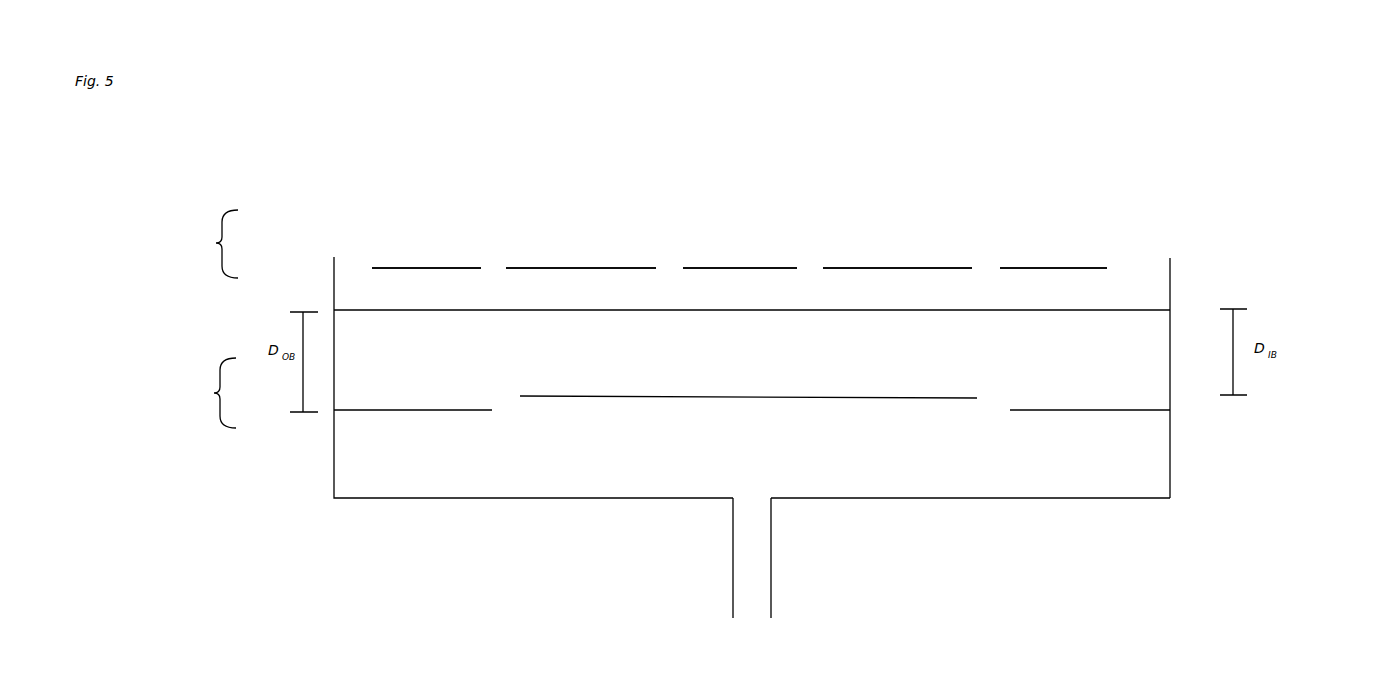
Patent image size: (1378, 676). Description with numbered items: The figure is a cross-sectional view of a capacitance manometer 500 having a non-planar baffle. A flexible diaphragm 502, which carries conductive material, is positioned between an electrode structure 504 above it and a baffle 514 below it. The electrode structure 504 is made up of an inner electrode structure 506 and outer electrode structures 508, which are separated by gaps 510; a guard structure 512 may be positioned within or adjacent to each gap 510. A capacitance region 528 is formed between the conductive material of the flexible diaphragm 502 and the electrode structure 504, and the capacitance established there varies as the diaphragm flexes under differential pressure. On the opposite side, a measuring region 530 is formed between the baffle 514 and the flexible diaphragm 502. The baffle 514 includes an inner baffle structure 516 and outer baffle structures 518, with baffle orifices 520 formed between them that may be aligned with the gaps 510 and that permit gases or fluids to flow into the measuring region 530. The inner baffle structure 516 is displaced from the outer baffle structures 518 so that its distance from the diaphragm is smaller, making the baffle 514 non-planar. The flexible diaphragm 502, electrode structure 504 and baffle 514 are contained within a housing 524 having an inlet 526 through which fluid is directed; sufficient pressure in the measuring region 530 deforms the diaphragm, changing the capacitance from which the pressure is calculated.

The capacitance manometer 500 is at (1283, 206).
The flexible diaphragm 502 is at (373, 308).
The electrode structure 504 is at (216, 243).
The inner electrode structure 506 is at (776, 268).
The outer electrode structure 508 is at (452, 268).
The gap 510 is at (668, 272).
The guard structure 512 is at (580, 268).
The baffle 514 is at (214, 393).
The inner baffle structure 516 is at (830, 397).
The outer baffle structure 518 is at (380, 412).
The baffle orifice 520 is at (498, 413).
The housing 524 is at (1170, 293).
The inlet 526 is at (737, 583).
The capacitance region 528 is at (752, 300).
The measuring region 530 is at (753, 366).